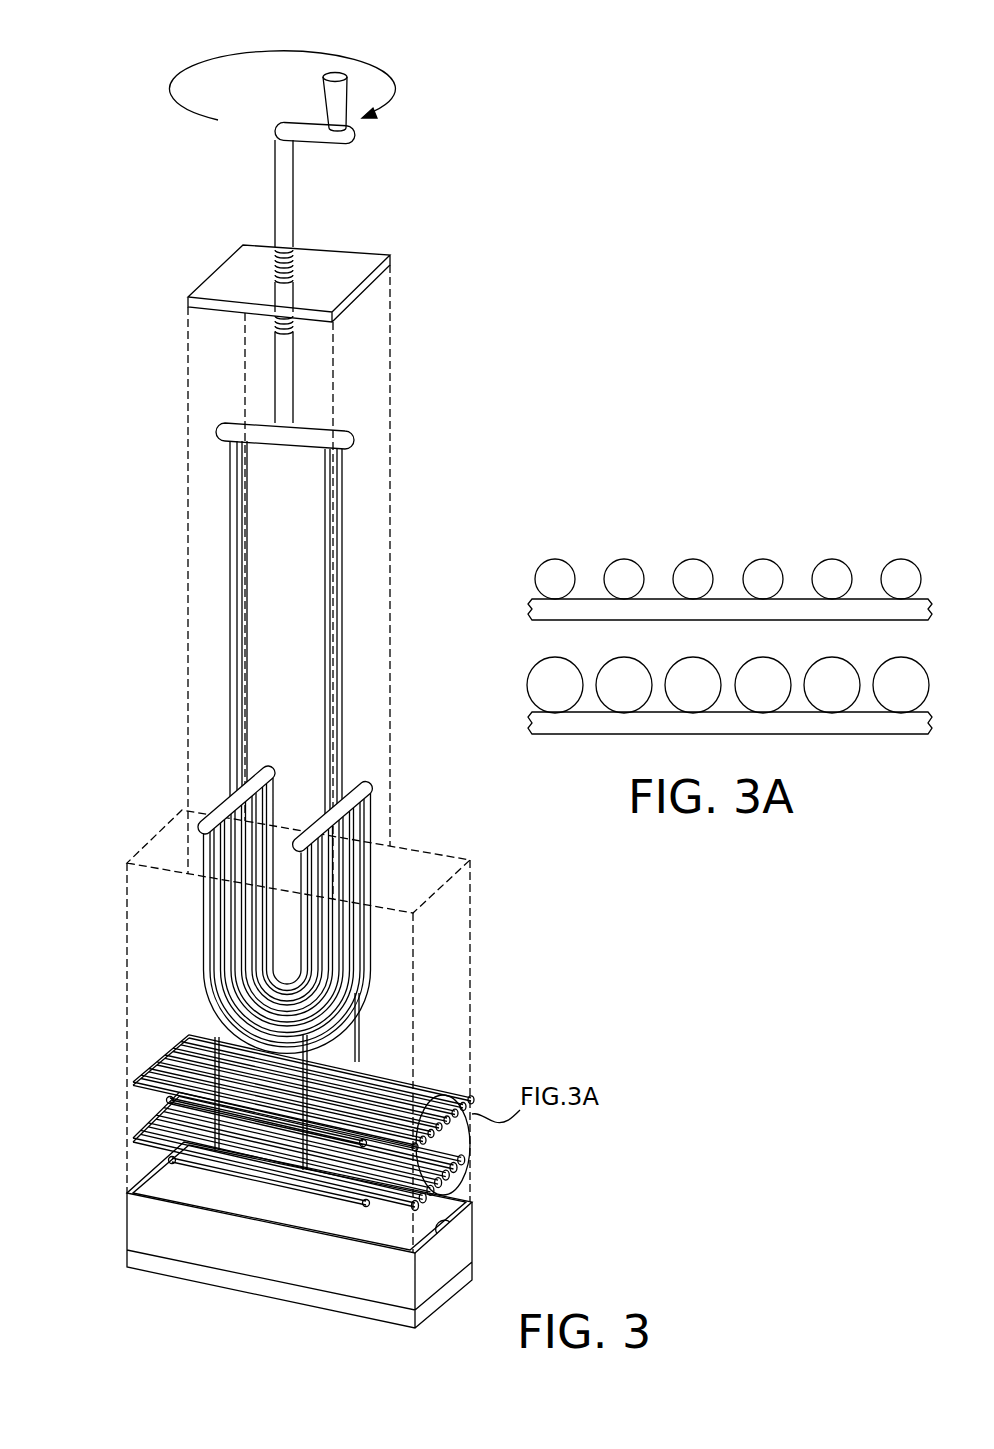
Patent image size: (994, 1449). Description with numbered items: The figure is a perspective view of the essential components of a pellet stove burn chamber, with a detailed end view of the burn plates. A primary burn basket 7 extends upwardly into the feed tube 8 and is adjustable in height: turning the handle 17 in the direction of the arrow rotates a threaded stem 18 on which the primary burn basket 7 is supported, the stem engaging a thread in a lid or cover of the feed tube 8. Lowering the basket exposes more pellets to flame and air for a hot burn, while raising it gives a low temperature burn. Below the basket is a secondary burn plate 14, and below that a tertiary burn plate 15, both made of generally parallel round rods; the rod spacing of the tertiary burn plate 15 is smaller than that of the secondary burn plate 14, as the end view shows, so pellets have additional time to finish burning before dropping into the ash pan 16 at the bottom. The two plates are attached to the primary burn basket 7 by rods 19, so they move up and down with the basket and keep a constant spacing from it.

In FIG. 3, the primary burn basket 7 is at (230, 618).
In FIG. 3, the feed tube 8 is at (188, 435).
In FIG. 3, the secondary burn plate 14 is at (165, 1048).
In FIG. 3A, the secondary burn plate 14 is at (518, 569).
In FIG. 3, the tertiary burn plate 15 is at (147, 1130).
In FIG. 3A, the tertiary burn plate 15 is at (518, 681).
In FIG. 3, the ash pan 16 is at (162, 1240).
In FIG. 3, the handle 17 is at (340, 98).
In FIG. 3, the threaded stem 18 is at (293, 250).
In FIG. 3, the rods 19 is at (322, 1048).